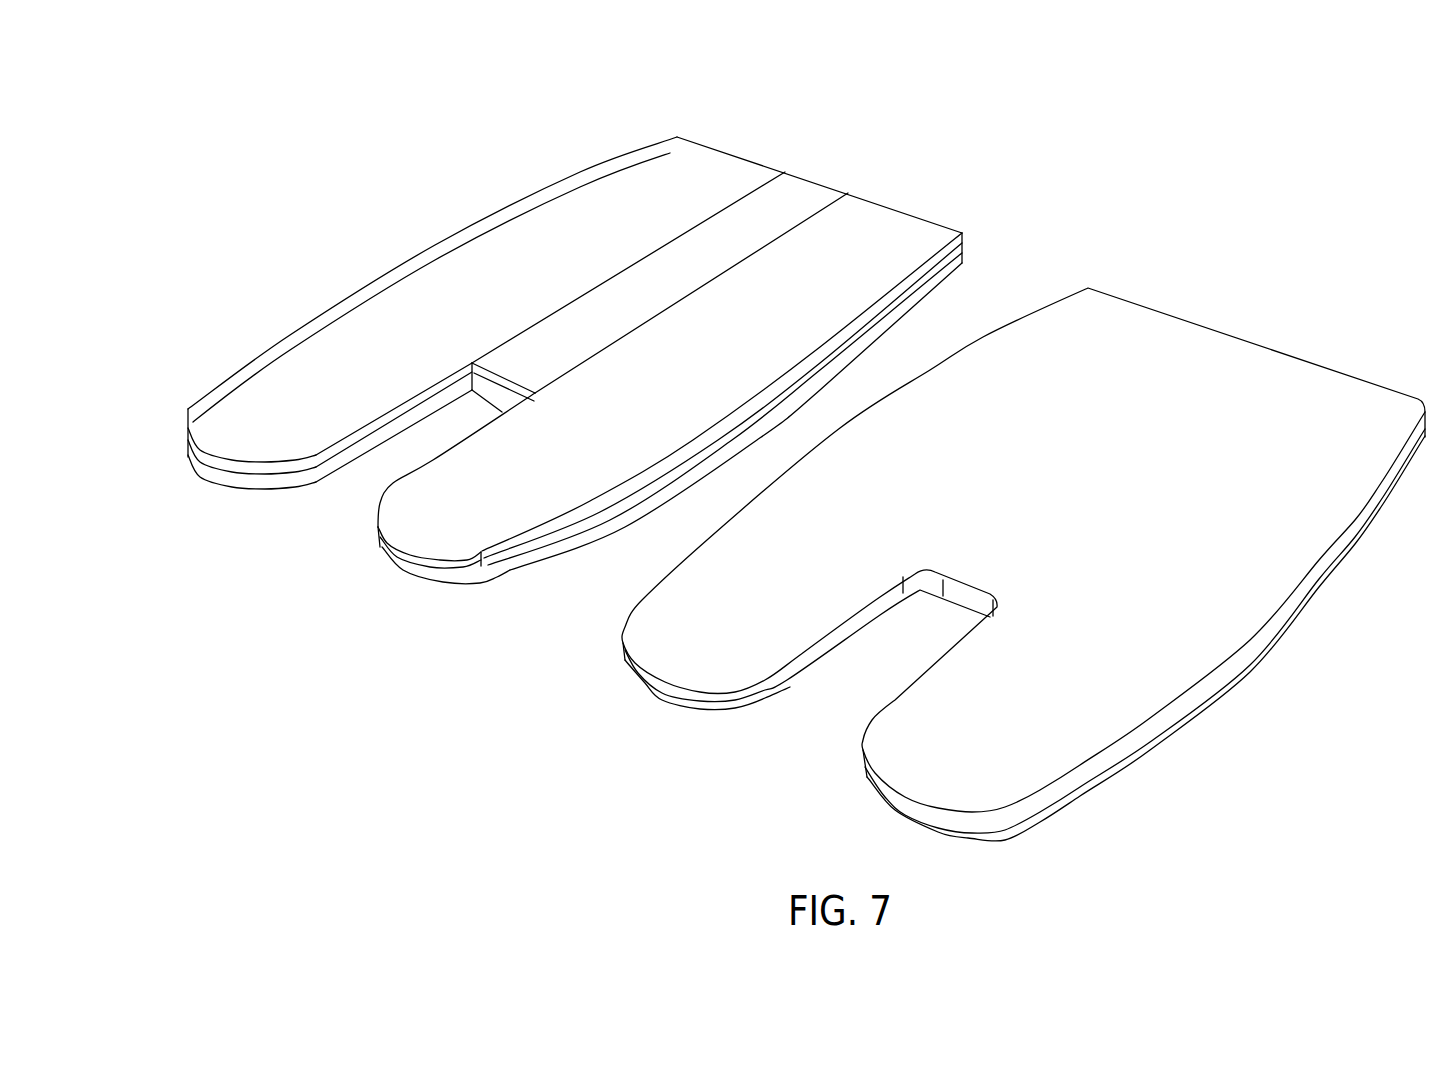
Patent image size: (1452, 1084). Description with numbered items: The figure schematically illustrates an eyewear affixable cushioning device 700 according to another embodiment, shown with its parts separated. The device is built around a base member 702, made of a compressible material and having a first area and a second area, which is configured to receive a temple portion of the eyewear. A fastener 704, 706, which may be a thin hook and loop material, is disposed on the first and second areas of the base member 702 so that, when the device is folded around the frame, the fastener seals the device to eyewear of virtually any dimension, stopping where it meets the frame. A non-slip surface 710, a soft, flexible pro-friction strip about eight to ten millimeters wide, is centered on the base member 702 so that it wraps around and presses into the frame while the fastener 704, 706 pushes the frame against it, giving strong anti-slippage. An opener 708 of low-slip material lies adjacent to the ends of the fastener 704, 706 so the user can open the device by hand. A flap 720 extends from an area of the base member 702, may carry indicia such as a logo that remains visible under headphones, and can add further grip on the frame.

The eyewear affixable cushioning device 700 is at (1180, 203).
The base member 702 is at (1254, 360).
The fastener 704 is at (737, 170).
The fastener 706 is at (890, 220).
The opener 708 is at (677, 137).
The non-slip surface 710 is at (806, 194).
The flap 720 is at (267, 431).